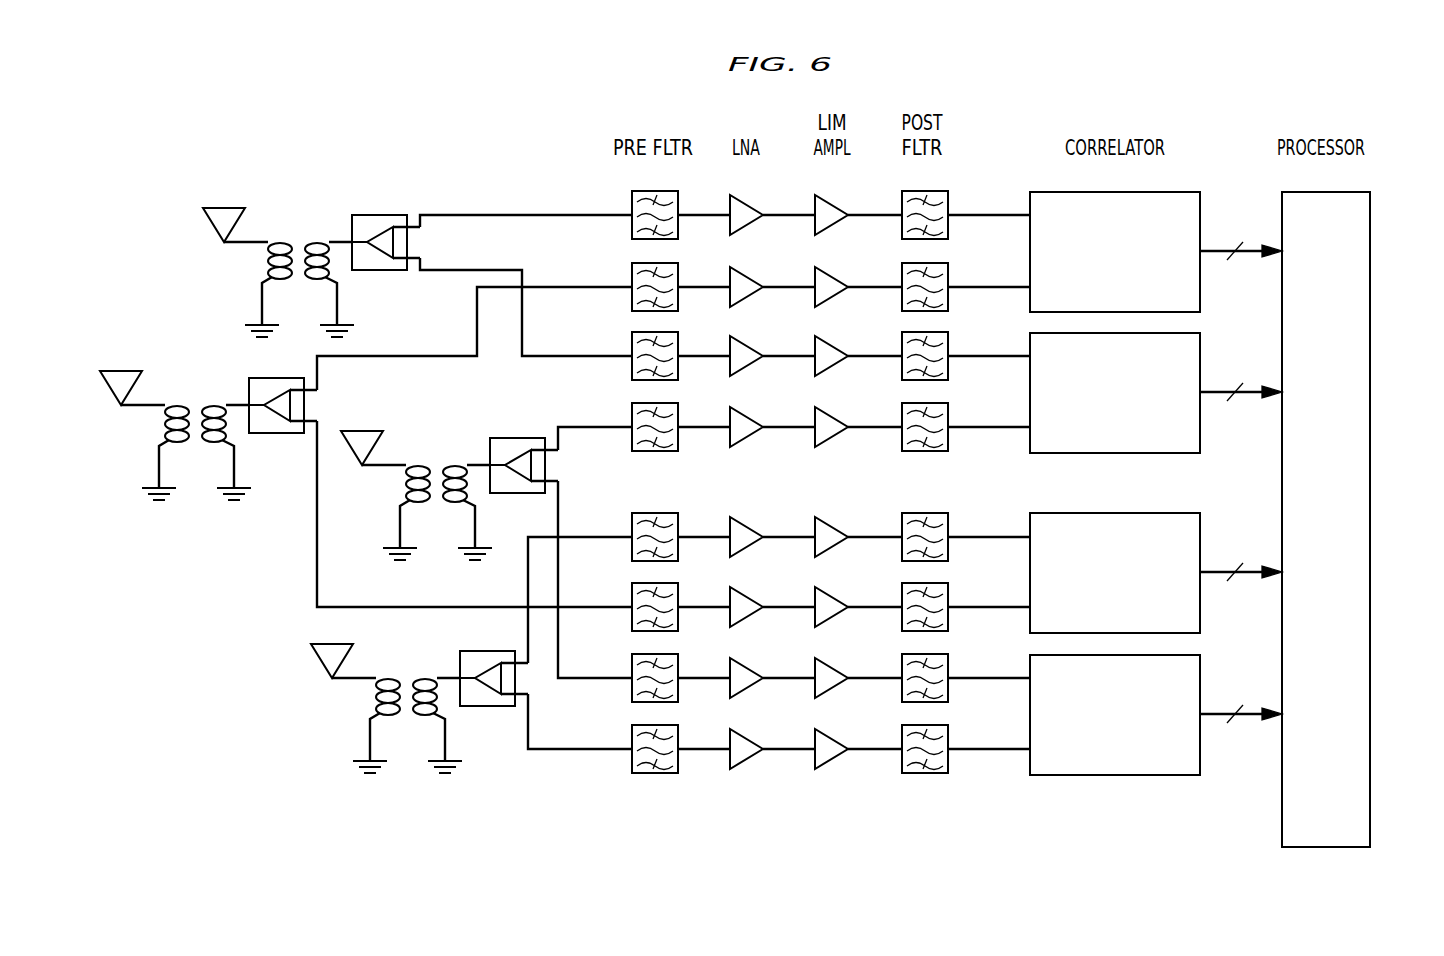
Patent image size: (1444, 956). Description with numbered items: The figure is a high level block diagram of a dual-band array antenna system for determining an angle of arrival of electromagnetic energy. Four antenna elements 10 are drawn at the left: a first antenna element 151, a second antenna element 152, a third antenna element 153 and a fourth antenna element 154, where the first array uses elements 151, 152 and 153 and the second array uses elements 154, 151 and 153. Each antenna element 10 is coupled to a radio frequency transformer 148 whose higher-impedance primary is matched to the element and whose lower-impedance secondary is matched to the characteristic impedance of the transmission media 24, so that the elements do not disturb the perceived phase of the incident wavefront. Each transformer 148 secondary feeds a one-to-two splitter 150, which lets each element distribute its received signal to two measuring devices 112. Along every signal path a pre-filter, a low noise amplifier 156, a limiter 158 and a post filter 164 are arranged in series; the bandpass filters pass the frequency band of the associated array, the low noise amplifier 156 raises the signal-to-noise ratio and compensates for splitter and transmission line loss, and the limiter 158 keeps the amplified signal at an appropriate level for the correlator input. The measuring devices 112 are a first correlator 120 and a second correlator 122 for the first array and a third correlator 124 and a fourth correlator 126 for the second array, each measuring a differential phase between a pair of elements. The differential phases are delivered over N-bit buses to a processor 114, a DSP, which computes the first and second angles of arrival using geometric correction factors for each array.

The antenna element 10 is at (388, 477).
The transmission media 24 is at (584, 479).
The measuring device 112 is at (1115, 483).
The processor 114 is at (1372, 268).
The first correlator 120 is at (1241, 221).
The second correlator 122 is at (1241, 362).
The third correlator 124 is at (1241, 542).
The fourth correlator 126 is at (1241, 684).
The radio frequency transformer 148 is at (306, 481).
The splitter 150 is at (403, 476).
The first antenna element 151 is at (148, 379).
The second antenna element 152 is at (440, 477).
The third antenna element 153 is at (389, 439).
The fourth antenna element 154 is at (359, 652).
The low noise amplifier 156 is at (767, 469).
The limiter 158 is at (853, 469).
The post filter 164 is at (954, 473).